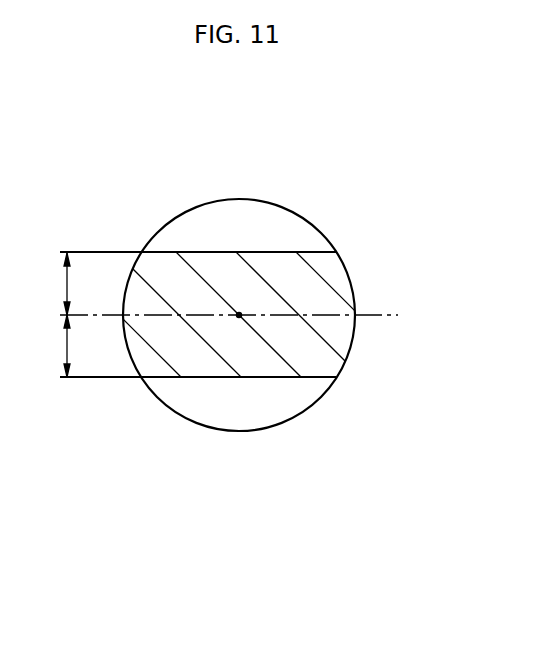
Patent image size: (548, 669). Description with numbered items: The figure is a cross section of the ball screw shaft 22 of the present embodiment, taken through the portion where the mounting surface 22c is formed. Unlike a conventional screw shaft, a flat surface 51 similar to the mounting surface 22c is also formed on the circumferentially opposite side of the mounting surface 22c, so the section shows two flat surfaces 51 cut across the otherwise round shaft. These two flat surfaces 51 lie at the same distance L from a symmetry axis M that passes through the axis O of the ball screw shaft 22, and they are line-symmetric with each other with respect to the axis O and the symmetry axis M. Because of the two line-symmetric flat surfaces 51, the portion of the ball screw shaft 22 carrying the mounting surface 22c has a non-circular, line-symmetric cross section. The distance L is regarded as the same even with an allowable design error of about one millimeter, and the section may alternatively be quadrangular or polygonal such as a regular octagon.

The ball screw shaft 22 is at (190, 210).
The mounting surface 22c is at (277, 252).
The flat surface 51 is at (270, 378).
The axis O is at (238, 316).
The symmetry axis M is at (376, 318).
The distance L is at (58, 315).